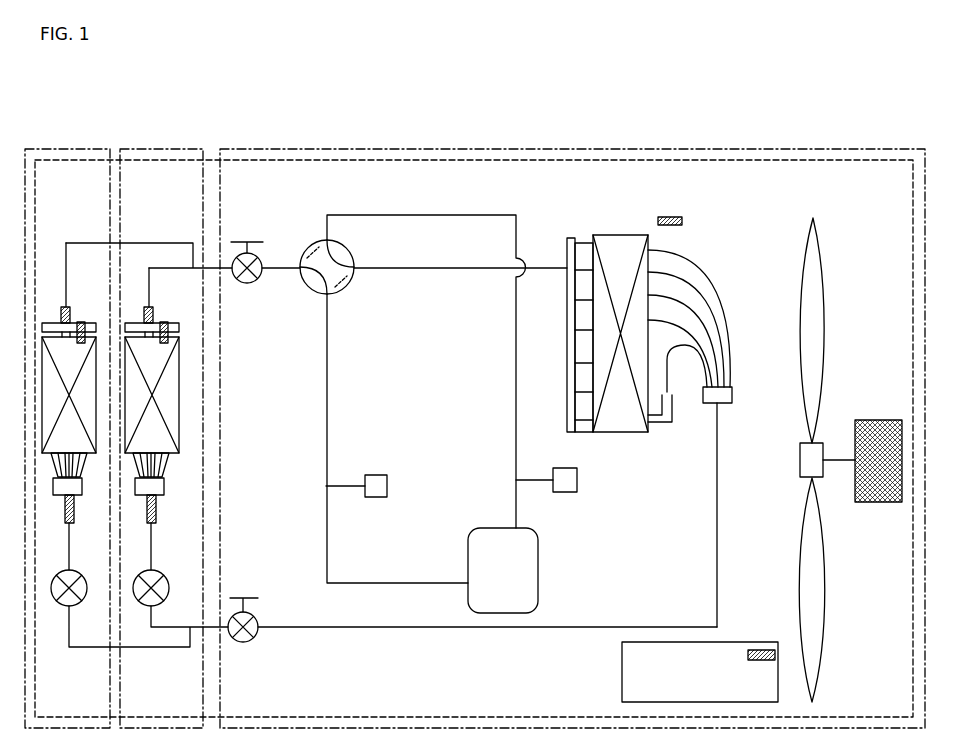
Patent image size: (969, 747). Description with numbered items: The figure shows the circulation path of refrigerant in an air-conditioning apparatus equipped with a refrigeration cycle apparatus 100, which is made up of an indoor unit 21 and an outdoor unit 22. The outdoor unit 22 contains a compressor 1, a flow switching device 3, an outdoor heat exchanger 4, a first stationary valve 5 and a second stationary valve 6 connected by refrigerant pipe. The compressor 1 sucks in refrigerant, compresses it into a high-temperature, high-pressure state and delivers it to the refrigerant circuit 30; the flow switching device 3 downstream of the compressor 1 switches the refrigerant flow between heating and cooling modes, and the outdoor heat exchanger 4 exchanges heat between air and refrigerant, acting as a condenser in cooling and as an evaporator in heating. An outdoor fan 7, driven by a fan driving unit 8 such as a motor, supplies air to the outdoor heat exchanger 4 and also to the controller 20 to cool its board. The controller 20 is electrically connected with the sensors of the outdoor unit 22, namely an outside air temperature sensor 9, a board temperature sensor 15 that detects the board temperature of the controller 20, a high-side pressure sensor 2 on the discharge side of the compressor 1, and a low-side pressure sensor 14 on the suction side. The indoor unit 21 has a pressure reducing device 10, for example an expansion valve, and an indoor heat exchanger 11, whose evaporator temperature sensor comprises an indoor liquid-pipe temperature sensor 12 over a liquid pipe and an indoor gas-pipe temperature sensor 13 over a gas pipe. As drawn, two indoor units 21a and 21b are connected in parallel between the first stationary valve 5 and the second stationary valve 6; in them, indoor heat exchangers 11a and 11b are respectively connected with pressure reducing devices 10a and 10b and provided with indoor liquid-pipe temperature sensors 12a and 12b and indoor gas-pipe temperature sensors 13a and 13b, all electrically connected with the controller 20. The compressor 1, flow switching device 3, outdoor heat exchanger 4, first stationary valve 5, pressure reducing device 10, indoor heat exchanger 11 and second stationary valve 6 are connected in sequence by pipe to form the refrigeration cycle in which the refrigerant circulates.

The compressor 1 is at (538, 553).
The high-side pressure sensor 2 is at (577, 480).
The flow switching device 3 is at (313, 240).
The outdoor heat exchanger 4 is at (620, 233).
The first stationary valve 5 is at (253, 597).
The second stationary valve 6 is at (253, 240).
The outdoor fan 7 is at (813, 217).
The fan driving unit 8 is at (868, 419).
The outside air temperature sensor 9 is at (668, 215).
The pressure reducing device 10 is at (106, 641).
The pressure reducing device 10a is at (61, 603).
The pressure reducing device 10b is at (144, 622).
The indoor heat exchanger 11 is at (175, 387).
The indoor heat exchanger 11a is at (97, 360).
The indoor heat exchanger 11b is at (271, 343).
The indoor liquid-pipe temperature sensor 12 is at (179, 511).
The indoor liquid-pipe temperature sensor 12a is at (75, 497).
The indoor liquid-pipe temperature sensor 12b is at (158, 513).
The indoor gas-pipe temperature sensor 13 is at (105, 246).
The indoor gas-pipe temperature sensor 13a is at (63, 305).
The indoor gas-pipe temperature sensor 13b is at (147, 264).
The low-side pressure sensor 14 is at (387, 486).
The board temperature sensor 15 is at (763, 649).
The controller 20 is at (732, 641).
The indoor unit 21 is at (114, 404).
The indoor unit 21a is at (105, 149).
The indoor unit 21b is at (161, 420).
The outdoor unit 22 is at (480, 149).
The refrigerant circuit 30 is at (602, 624).
The refrigeration cycle apparatus 100 is at (705, 159).